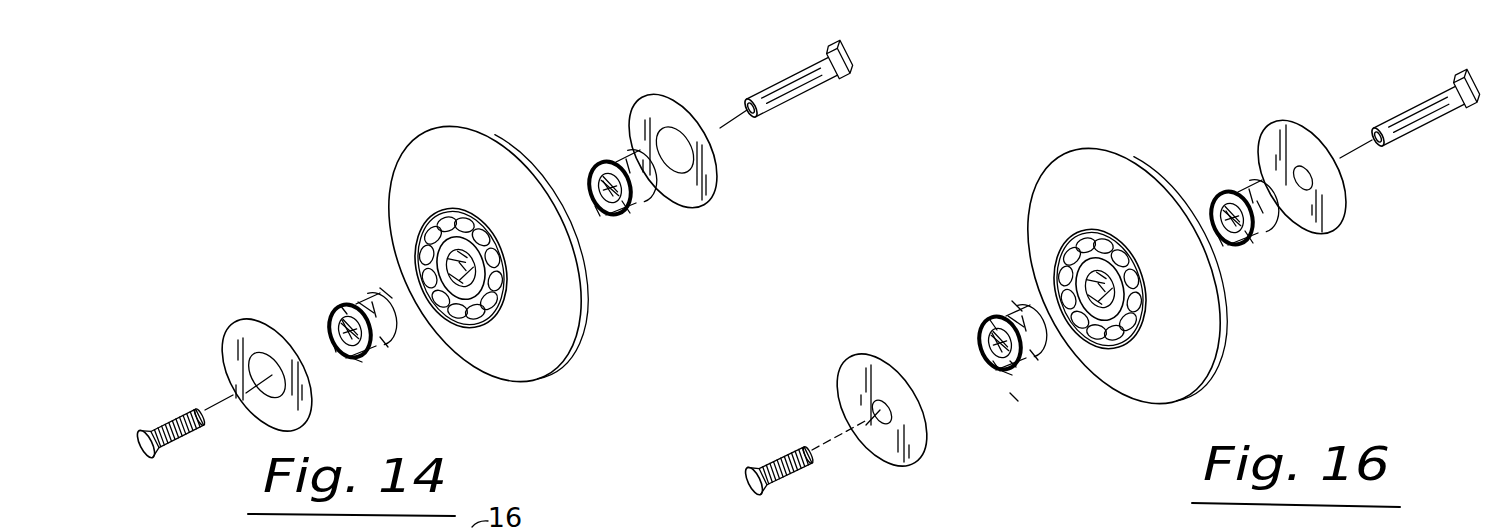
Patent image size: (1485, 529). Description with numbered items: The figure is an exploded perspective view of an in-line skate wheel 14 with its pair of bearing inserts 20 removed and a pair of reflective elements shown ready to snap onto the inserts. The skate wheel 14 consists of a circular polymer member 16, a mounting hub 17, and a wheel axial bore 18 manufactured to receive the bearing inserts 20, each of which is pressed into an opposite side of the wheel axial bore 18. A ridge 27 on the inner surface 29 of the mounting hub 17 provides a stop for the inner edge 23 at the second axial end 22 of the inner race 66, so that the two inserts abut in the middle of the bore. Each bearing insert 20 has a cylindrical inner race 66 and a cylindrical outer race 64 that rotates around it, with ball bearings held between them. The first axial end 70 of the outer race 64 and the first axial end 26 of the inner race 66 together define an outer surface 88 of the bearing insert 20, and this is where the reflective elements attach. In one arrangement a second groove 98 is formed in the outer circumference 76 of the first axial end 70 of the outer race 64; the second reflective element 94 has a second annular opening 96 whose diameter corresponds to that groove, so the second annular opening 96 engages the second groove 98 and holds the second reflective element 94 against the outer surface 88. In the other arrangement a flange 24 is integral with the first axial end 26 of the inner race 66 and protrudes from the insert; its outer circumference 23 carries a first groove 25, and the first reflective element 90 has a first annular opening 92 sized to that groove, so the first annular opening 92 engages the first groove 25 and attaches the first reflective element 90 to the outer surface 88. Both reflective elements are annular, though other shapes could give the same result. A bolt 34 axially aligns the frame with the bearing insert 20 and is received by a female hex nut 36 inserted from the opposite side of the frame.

In FIG. 14, the in-line skate wheel 14 is at (605, 317).
In FIG. 16, the in-line skate wheel 14 is at (1233, 335).
In FIG. 14, the circular polymer member 16 is at (465, 146).
In FIG. 16, the circular polymer member 16 is at (1108, 165).
In FIG. 14, the mounting hub 17 is at (458, 313).
In FIG. 16, the mounting hub 17 is at (1103, 317).
In FIG. 14, the wheel axial bore 18 is at (500, 317).
In FIG. 16, the wheel axial bore 18 is at (1141, 334).
In FIG. 14, the bearing insert 20 is at (348, 300).
In FIG. 16, the bearing insert 20 is at (993, 310).
In FIG. 14, the second axial end of the inner race 22 is at (393, 268).
In FIG. 16, the second axial end of the inner race 22 is at (1017, 300).
In FIG. 16, the outer circumference of the flange 23 is at (1007, 397).
In FIG. 16, the flange 24 is at (992, 368).
In FIG. 16, the first groove 25 is at (987, 335).
In FIG. 14, the first axial end of the inner race 26 is at (337, 345).
In FIG. 16, the first axial end of the inner race 26 is at (1013, 363).
In FIG. 14, the ridge 27 is at (452, 307).
In FIG. 16, the ridge 27 is at (1127, 275).
In FIG. 14, the inner surface of the mounting hub 29 is at (420, 263).
In FIG. 16, the inner surface of the mounting hub 29 is at (1060, 282).
In FIG. 14, the bolt 34 is at (175, 425).
In FIG. 16, the bolt 34 is at (782, 460).
In FIG. 14, the female hex nut 36 is at (803, 68).
In FIG. 16, the female hex nut 36 is at (1428, 92).
In FIG. 14, the outer race 64 is at (380, 343).
In FIG. 16, the outer race 64 is at (1023, 357).
In FIG. 14, the inner race 66 is at (345, 358).
In FIG. 16, the inner race 66 is at (1000, 370).
In FIG. 14, the first axial end of the outer race 70 is at (373, 312).
In FIG. 16, the first axial end of the outer race 70 is at (990, 323).
In FIG. 14, the outer circumference of the outer race 76 is at (383, 353).
In FIG. 16, the outer circumference of the outer race 76 is at (1000, 312).
In FIG. 14, the outer surface of the bearing insert 88 is at (358, 360).
In FIG. 16, the outer surface of the bearing insert 88 is at (1000, 373).
In FIG. 16, the first reflective element 90 is at (855, 368).
In FIG. 16, the first annular opening 92 is at (877, 403).
In FIG. 14, the second reflective element 94 is at (228, 343).
In FIG. 14, the second annular opening 96 is at (265, 357).
In FIG. 14, the second groove 98 is at (343, 307).